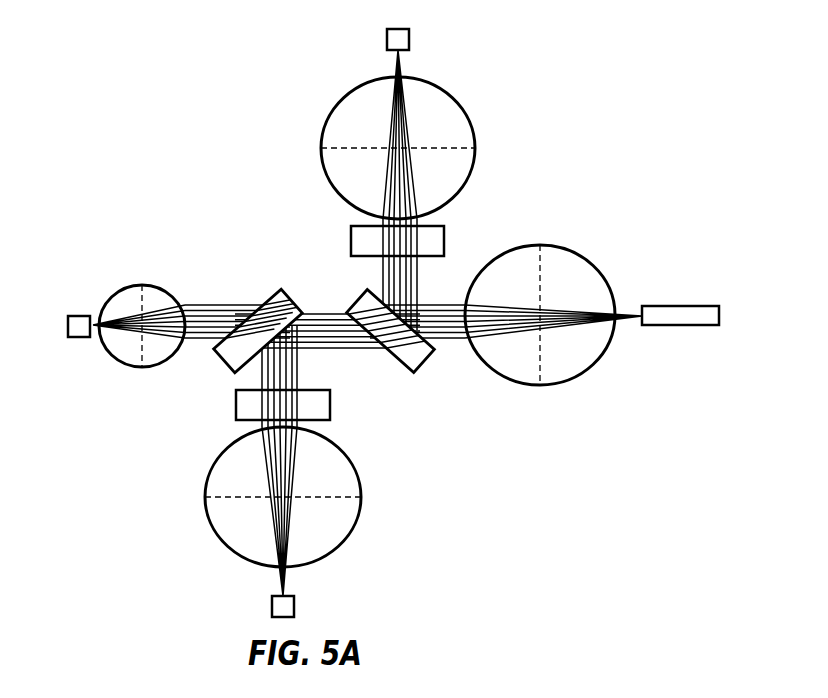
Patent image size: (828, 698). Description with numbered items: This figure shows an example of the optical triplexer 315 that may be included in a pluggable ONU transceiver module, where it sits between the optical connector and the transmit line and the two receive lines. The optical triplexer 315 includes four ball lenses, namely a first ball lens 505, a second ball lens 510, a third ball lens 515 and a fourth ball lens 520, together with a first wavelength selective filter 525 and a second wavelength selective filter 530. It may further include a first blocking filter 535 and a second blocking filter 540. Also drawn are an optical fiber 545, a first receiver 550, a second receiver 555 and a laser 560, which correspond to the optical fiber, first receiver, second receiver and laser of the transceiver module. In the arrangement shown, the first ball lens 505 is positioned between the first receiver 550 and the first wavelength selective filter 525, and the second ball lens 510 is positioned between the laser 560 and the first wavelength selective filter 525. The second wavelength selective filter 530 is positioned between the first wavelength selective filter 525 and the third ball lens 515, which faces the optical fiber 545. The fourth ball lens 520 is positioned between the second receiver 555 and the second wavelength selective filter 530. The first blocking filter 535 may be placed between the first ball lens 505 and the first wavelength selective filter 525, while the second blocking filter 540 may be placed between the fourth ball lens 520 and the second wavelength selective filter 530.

The optical triplexer 315 is at (155, 111).
The first ball lens 505 is at (361, 503).
The second ball lens 510 is at (135, 285).
The third ball lens 515 is at (576, 376).
The fourth ball lens 520 is at (476, 128).
The first wavelength selective filter 525 is at (268, 290).
The second wavelength selective filter 530 is at (437, 373).
The first blocking filter 535 is at (331, 404).
The second blocking filter 540 is at (445, 240).
The optical fiber 545 is at (682, 310).
The first receiver 550 is at (295, 607).
The second receiver 555 is at (410, 40).
The laser 560 is at (72, 316).